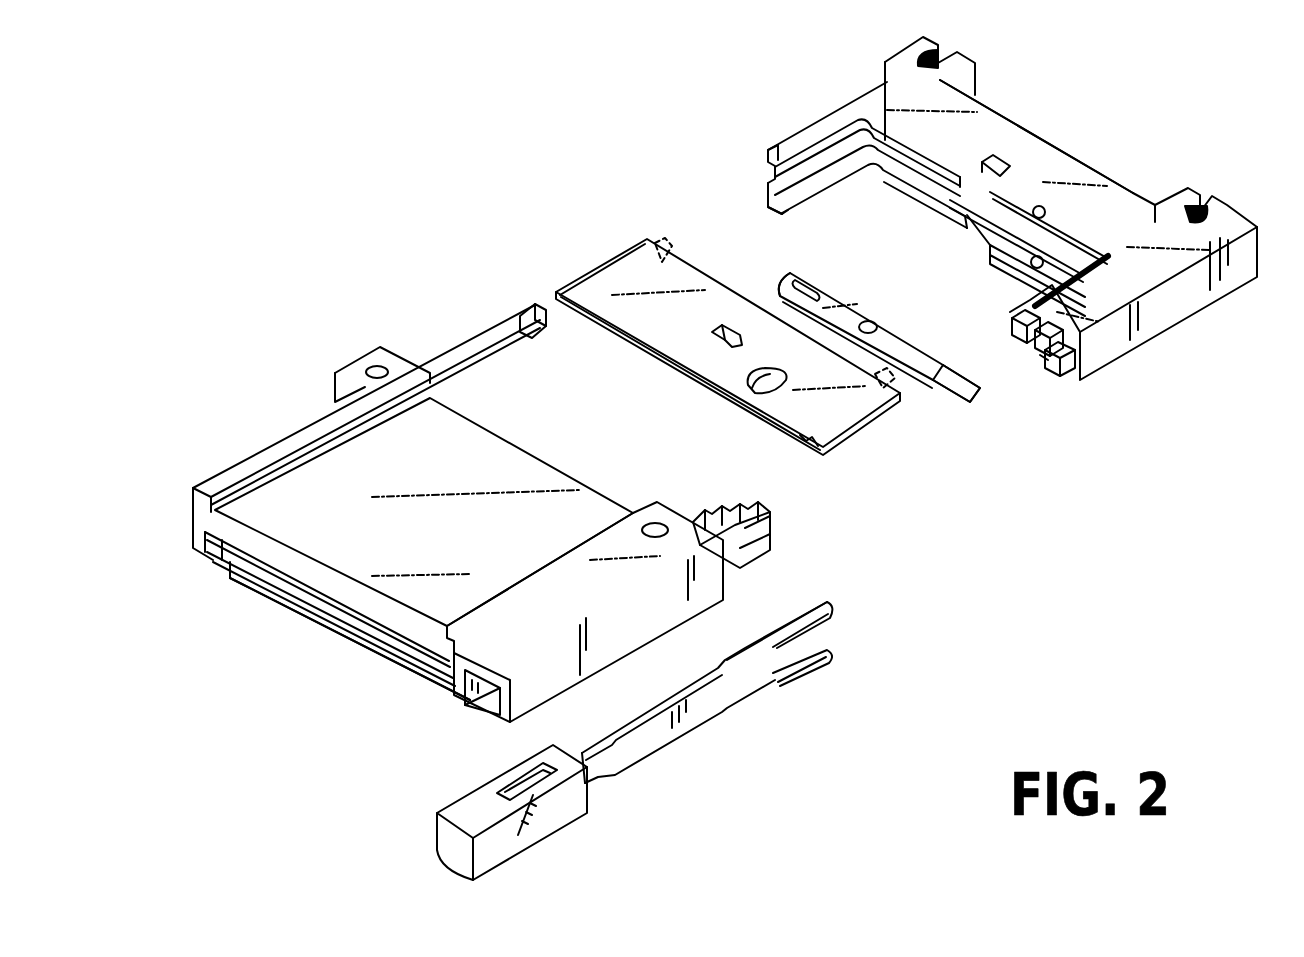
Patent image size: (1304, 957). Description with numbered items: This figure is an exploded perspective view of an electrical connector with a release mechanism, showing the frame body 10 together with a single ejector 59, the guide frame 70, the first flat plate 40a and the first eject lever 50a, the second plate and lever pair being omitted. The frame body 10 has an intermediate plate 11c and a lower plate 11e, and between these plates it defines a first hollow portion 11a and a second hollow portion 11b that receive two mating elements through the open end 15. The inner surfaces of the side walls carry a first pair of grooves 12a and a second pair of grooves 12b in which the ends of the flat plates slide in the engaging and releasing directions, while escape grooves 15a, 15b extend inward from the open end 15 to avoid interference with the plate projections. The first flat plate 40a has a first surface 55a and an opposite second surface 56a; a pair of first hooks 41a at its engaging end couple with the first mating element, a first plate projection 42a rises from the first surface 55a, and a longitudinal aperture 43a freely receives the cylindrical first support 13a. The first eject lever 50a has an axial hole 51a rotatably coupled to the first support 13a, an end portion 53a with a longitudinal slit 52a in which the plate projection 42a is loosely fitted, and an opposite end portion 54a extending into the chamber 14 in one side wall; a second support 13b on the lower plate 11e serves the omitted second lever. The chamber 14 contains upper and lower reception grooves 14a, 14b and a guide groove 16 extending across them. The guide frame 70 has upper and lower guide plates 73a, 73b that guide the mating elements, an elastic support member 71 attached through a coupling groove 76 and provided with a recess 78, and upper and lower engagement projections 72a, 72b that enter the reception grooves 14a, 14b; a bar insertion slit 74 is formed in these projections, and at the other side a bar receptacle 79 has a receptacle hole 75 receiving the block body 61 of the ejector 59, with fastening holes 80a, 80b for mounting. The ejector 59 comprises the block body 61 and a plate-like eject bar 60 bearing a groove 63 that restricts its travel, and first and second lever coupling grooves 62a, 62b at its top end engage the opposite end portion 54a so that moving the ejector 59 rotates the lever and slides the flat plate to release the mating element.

The frame body 10 is at (998, 112).
The first hollow portion 11a is at (884, 140).
The second hollow portion 11b is at (897, 178).
The intermediate plate 11c is at (1105, 252).
The lower plate 11e is at (860, 178).
The first pair of grooves 12a is at (806, 152).
The second pair of grooves 12b is at (1018, 336).
The first support 13a is at (1046, 208).
The second support 13b is at (1030, 270).
The chamber 14 is at (1032, 350).
The upper reception groove 14a is at (1080, 362).
The lower reception groove 14b is at (1065, 372).
The open end 15 is at (914, 210).
The escape groove 15a is at (1006, 170).
The escape groove 15b is at (975, 228).
The guide groove 16 is at (1045, 370).
The first flat plate 40a is at (634, 242).
The first hooks 41a is at (668, 246).
The first plate projection 42a is at (715, 340).
The longitudinal aperture 43a is at (758, 390).
The first eject lever 50a is at (908, 332).
The axial hole 51a is at (876, 322).
The longitudinal slit 52a is at (815, 280).
The end portion 53a is at (784, 286).
The opposite end portion 54a is at (968, 406).
The first surface 55a is at (600, 286).
The second surface 56a is at (615, 336).
The ejector 59 is at (490, 858).
The eject bar 60 is at (698, 740).
The block body 61 is at (527, 832).
The first lever coupling groove 62a is at (782, 640).
The second lever coupling groove 62b is at (795, 676).
The groove 63 is at (545, 775).
The guide frame 70 is at (300, 440).
The elastic support member 71 is at (452, 345).
The upper engagement projection 72a is at (770, 508).
The lower engagement projection 72b is at (778, 538).
The upper guide plate 73a is at (300, 545).
The lower guide plate 73b is at (318, 600).
The bar insertion slit 74 is at (700, 512).
The receptacle hole 75 is at (478, 700).
The coupling groove 76 is at (768, 182).
The recess 78 is at (522, 312).
The bar receptacle 79 is at (626, 632).
The fastening hole 80a is at (383, 366).
The fastening hole 80b is at (650, 520).